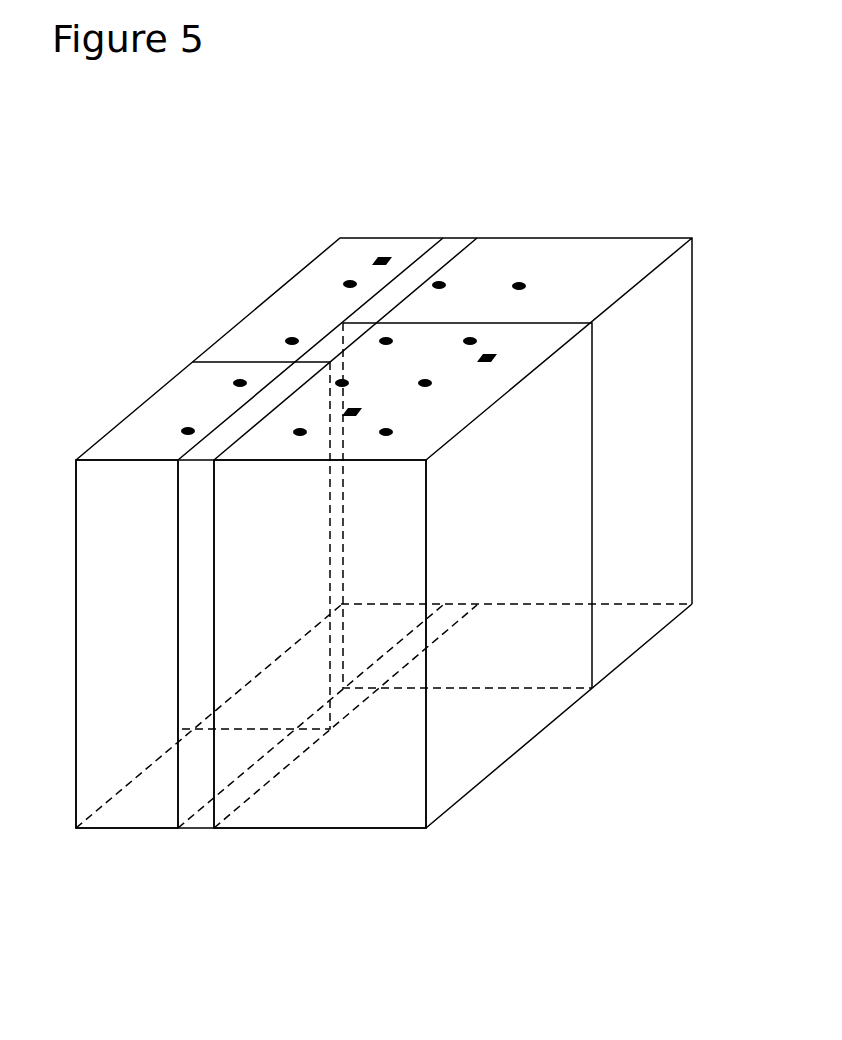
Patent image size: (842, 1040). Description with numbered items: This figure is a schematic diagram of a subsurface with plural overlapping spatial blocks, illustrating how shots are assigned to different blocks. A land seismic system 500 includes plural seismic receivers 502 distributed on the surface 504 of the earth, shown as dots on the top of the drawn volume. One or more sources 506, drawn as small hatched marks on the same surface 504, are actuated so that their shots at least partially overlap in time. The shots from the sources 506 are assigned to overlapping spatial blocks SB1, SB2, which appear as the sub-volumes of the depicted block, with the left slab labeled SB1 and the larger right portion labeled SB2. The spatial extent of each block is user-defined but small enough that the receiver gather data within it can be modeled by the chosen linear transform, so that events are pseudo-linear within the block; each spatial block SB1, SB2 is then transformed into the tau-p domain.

The land seismic system 500 is at (346, 133).
The seismic receivers 502 is at (290, 342).
The surface 504 is at (510, 253).
The sources 506 is at (383, 257).
The spatial block SB1 is at (118, 503).
The spatial block SB2 is at (282, 807).